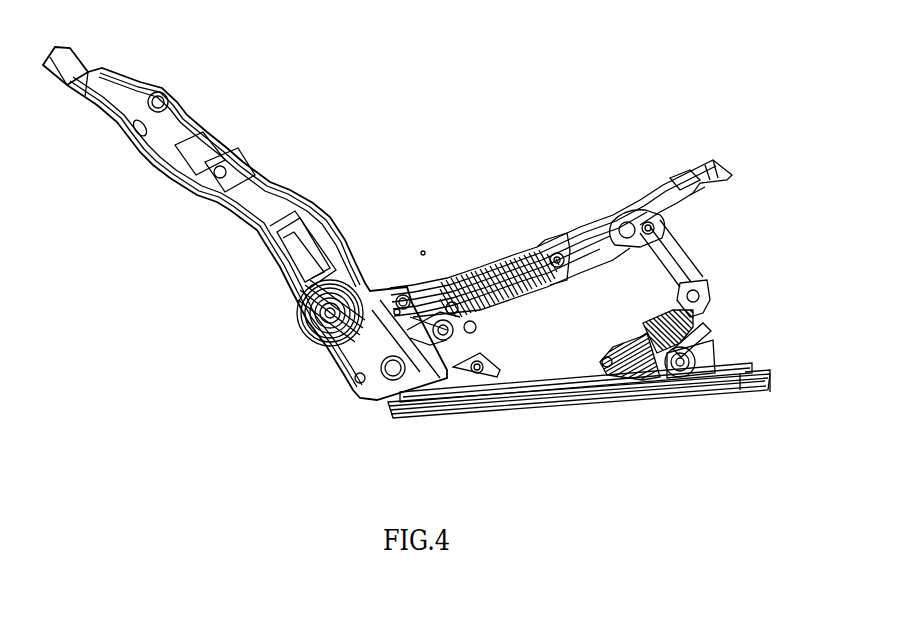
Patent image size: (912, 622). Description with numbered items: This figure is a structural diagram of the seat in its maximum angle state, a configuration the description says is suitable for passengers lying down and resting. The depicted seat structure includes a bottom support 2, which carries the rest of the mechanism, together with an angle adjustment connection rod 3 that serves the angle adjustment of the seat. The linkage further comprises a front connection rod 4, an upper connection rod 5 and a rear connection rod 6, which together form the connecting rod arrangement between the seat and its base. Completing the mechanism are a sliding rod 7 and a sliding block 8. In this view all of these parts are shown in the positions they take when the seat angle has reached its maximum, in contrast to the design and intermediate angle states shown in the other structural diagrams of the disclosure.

The bottom support 2 is at (555, 392).
The angle adjustment connection rod 3 is at (687, 345).
The front connection rod 4 is at (680, 250).
The upper connection rod 5 is at (498, 306).
The rear connection rod 6 is at (440, 375).
The sliding rod 7 is at (667, 327).
The sliding block 8 is at (640, 337).